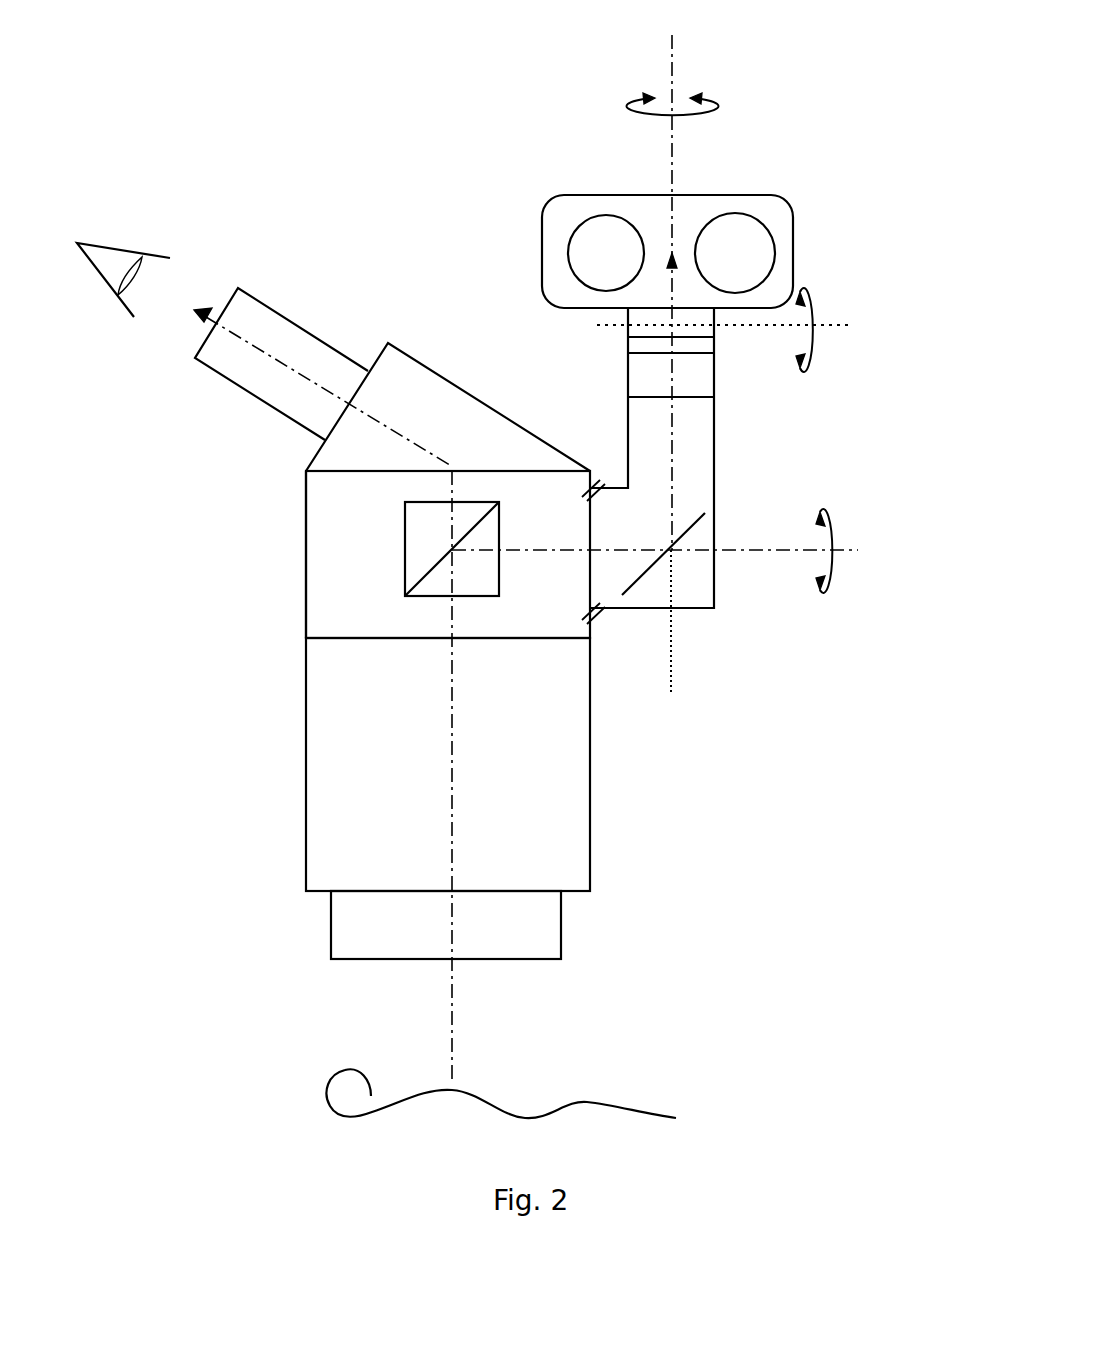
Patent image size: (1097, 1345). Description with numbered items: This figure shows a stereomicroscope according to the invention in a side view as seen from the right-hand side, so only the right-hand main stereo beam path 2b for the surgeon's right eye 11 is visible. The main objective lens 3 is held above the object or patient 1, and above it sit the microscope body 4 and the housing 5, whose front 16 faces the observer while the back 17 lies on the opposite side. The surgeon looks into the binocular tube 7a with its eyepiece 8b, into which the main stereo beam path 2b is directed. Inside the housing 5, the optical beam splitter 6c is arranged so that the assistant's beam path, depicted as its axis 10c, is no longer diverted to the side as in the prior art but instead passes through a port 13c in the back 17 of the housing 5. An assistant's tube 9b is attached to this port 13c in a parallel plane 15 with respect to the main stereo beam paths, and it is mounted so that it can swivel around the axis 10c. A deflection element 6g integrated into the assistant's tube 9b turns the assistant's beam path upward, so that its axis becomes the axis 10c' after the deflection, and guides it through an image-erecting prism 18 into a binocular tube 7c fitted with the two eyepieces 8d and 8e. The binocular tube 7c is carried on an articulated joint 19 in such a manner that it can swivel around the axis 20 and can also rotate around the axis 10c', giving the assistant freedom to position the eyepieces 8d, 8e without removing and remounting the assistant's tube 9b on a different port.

The object or patient 1 is at (325, 1096).
The main stereo beam path 2b is at (452, 1035).
The main objective lens 3 is at (349, 945).
The microscope body 4 is at (320, 872).
The housing 5 is at (322, 592).
The optical beam splitter 6c is at (406, 561).
The deflection element 6g is at (707, 520).
The binocular tube 7a is at (330, 456).
The binocular tube 7c is at (775, 290).
The eyepiece 8b is at (297, 347).
The eyepiece 8d is at (608, 223).
The eyepiece 8e is at (743, 227).
The assistant's tube 9b is at (665, 481).
The axis of assistant's beam path 10c is at (706, 550).
The axis of assistant's beam path after deflection 10c' is at (732, 287).
The surgeon's right eye 11 is at (118, 250).
The port 13c is at (576, 502).
The parallel plane 15 is at (670, 675).
The front 16 is at (306, 520).
The back 17 is at (590, 625).
The image-erecting prism 18 is at (702, 380).
The articulated joint 19 is at (636, 333).
The axis 20 is at (850, 325).